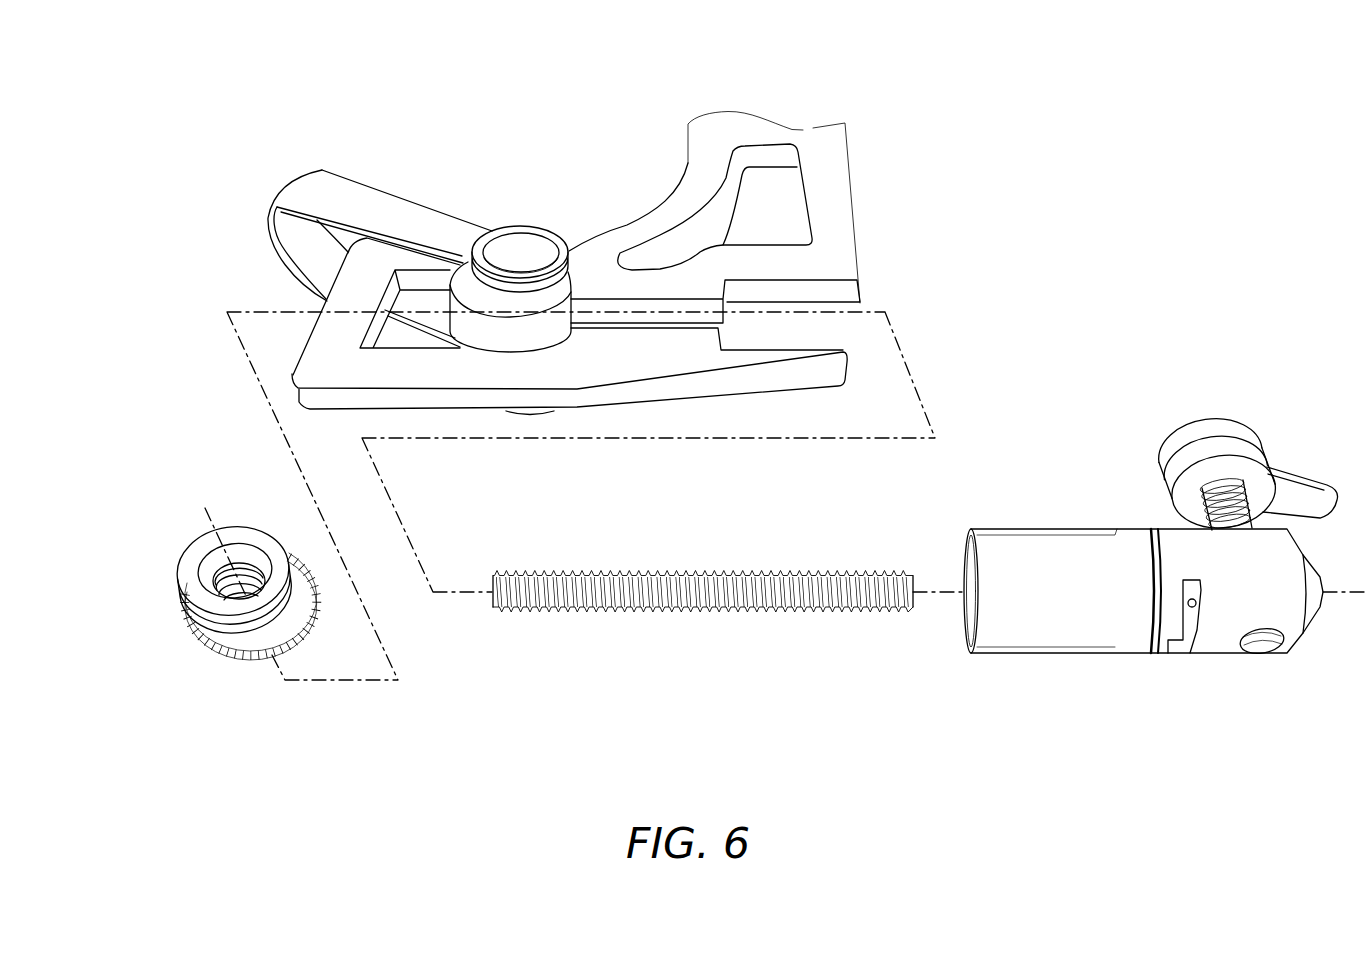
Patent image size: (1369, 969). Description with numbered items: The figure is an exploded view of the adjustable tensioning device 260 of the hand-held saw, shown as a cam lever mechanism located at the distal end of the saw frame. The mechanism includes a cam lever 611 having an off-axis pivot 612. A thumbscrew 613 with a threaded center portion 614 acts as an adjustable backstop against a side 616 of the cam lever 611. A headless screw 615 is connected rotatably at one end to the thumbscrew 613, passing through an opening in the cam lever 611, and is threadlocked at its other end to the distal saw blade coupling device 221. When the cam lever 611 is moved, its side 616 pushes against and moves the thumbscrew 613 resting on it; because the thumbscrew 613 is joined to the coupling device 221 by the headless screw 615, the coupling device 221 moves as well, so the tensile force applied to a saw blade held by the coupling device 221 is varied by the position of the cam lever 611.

The tensioning device 260 is at (1101, 224).
The cam lever 611 is at (320, 190).
The off-axis pivot 612 is at (523, 230).
The thumbscrew 613 is at (202, 645).
The threaded center portion 614 is at (213, 578).
The headless screw 615 is at (598, 612).
The side of cam lever 616 is at (480, 330).
The distal coupling device 221 is at (1063, 577).